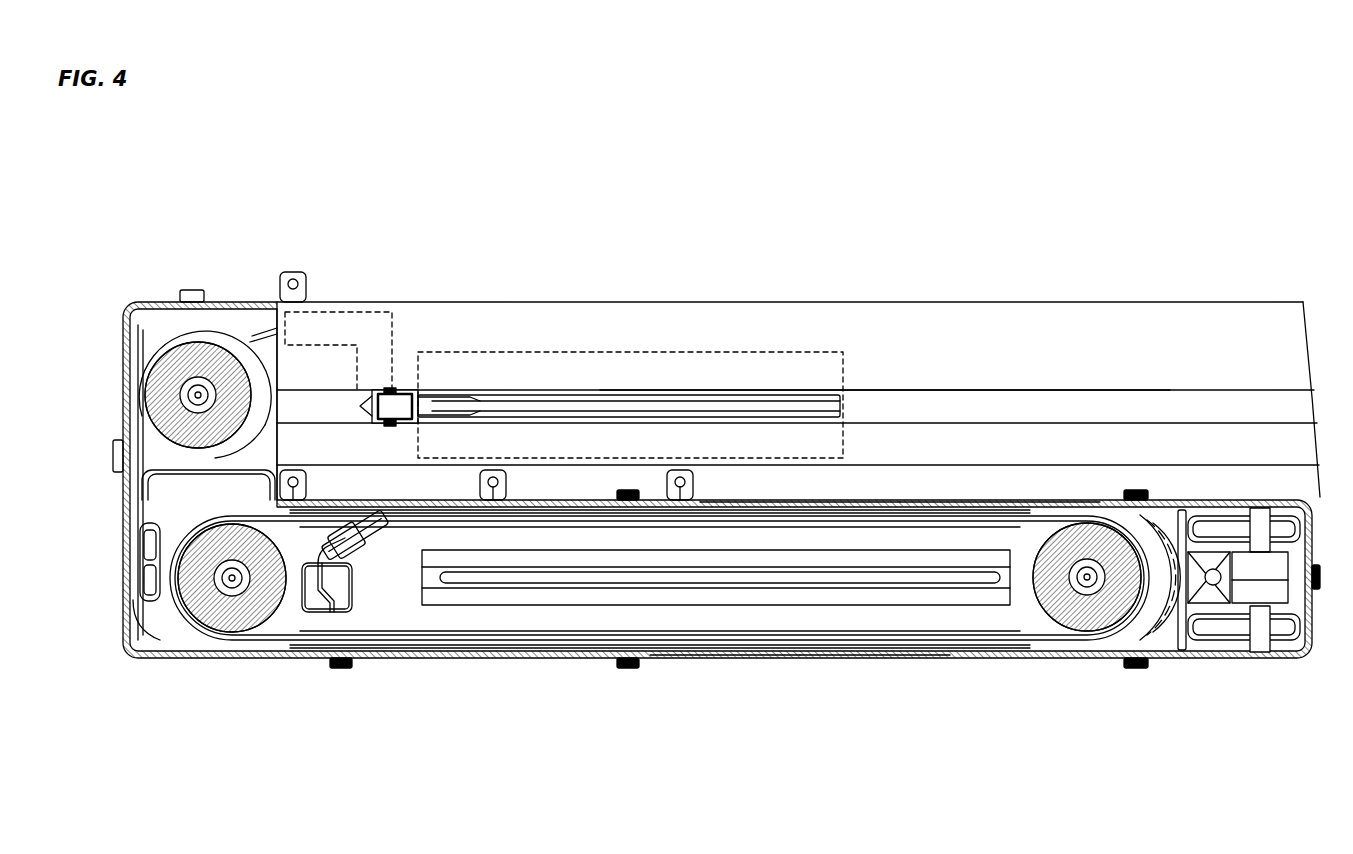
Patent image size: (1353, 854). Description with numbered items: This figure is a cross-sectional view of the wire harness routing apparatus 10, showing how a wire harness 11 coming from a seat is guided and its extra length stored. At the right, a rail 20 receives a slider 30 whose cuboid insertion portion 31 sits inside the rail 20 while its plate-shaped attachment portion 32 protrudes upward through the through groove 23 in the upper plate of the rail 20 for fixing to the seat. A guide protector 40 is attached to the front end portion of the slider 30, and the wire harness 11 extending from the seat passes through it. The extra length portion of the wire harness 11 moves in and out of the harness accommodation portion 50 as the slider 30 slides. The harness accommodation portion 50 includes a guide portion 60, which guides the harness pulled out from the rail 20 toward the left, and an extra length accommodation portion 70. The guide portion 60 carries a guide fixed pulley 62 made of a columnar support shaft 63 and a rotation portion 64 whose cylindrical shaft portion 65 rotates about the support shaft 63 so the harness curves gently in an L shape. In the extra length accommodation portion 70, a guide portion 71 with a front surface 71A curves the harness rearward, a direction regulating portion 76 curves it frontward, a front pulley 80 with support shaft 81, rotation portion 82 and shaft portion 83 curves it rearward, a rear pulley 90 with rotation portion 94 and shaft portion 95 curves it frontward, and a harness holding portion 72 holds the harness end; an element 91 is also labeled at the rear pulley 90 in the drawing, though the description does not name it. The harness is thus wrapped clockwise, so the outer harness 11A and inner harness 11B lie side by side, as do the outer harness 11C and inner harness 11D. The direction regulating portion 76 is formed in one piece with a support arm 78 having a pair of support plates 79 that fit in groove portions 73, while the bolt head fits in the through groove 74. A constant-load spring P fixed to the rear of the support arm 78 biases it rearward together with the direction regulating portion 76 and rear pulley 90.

The wire harness routing apparatus 10 is at (776, 240).
The wire harness 11 is at (126, 503).
The outer harness 11A is at (725, 658).
The inner harness 11B is at (800, 658).
The outer harness 11C is at (849, 510).
The inner harness 11D is at (984, 515).
The rail 20 is at (1231, 330).
The through groove 23 is at (1168, 393).
The slider 30 is at (640, 248).
The insertion portion 31 is at (600, 352).
The attachment portion 32 is at (538, 400).
The guide protector 40 is at (412, 392).
The harness accommodation portion 50 is at (522, 660).
The guide portion 60 is at (142, 370).
The guide fixed pulley 62 is at (198, 360).
The support shaft 63 is at (220, 386).
The rotation portion 64 is at (150, 457).
The shaft portion 65 is at (172, 365).
The extra length accommodation portion 70 is at (468, 651).
The guide portion 71 is at (142, 571).
The front surface 71A is at (145, 625).
The harness holding portion 72 is at (374, 550).
The groove portion 73 is at (690, 590).
The through groove 74 is at (589, 577).
The direction regulating portion 76 is at (1184, 600).
The support arm 78 is at (1236, 605).
The support plate 79 is at (1211, 604).
The front pulley 80 is at (328, 614).
The support shaft 81 is at (232, 596).
The rotation portion 82 is at (192, 648).
The shaft portion 83 is at (258, 612).
The rear pulley 90 is at (1132, 640).
The drive roller shaft 91 is at (1097, 588).
The rotation portion 94 is at (1022, 615).
The shaft portion 95 is at (1068, 600).
The constant-load spring P is at (1265, 570).